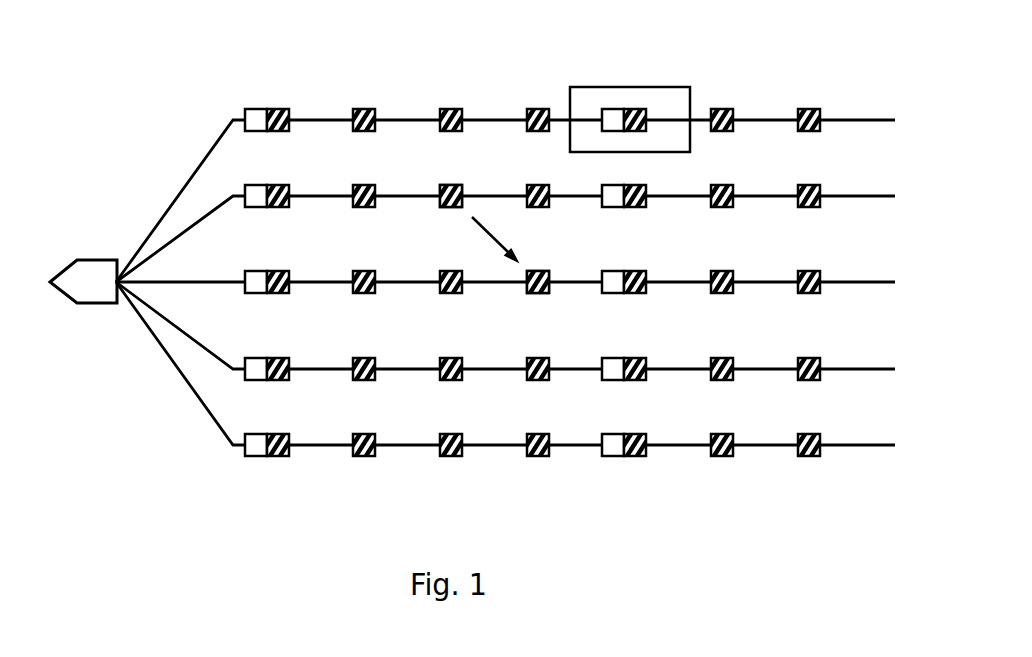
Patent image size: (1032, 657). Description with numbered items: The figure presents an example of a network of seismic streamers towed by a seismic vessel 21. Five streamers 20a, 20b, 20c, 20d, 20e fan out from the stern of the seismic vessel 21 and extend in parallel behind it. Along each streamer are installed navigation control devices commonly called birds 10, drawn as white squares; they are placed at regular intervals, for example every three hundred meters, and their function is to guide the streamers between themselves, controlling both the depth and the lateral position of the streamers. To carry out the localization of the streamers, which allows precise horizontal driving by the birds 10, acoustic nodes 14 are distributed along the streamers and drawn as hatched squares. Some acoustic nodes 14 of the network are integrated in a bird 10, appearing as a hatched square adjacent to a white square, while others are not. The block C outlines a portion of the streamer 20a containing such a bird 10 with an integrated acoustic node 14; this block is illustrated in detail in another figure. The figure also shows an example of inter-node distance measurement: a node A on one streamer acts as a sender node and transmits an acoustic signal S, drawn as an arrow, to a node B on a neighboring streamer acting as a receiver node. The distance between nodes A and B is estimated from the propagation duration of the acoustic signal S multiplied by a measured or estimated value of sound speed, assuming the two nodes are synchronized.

The bird 10 is at (255, 108).
The acoustic node 14 is at (288, 108).
The seismic streamer 20a is at (226, 126).
The seismic streamer 20b is at (202, 218).
The seismic streamer 20c is at (180, 282).
The seismic streamer 20d is at (170, 325).
The seismic streamer 20e is at (196, 400).
The seismic vessel 21 is at (98, 320).
The block C is at (690, 86).
The sender node A is at (450, 186).
The receiver node B is at (537, 270).
The acoustic signal S is at (495, 239).